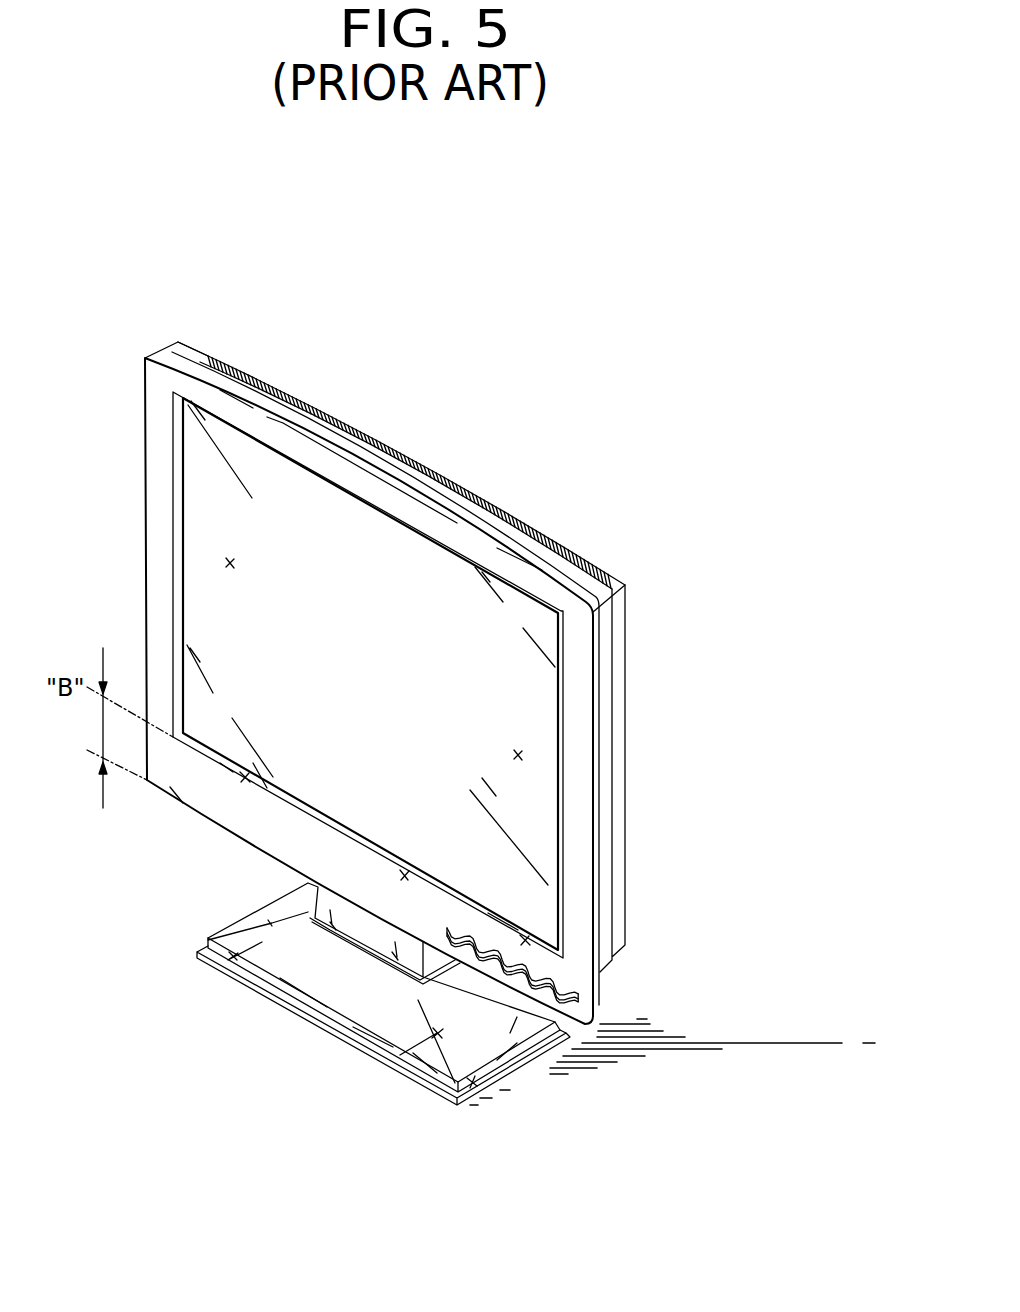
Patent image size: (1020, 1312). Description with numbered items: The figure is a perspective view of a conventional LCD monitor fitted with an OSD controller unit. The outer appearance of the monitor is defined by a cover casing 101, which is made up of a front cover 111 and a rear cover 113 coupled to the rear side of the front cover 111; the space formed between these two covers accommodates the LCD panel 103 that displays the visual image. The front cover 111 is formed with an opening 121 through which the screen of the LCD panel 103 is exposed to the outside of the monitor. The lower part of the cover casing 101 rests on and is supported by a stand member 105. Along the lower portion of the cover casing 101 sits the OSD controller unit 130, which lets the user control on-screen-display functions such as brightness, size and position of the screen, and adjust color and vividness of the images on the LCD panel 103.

The cover casing 101 is at (342, 611).
The front cover 111 is at (147, 357).
The rear cover 113 is at (185, 352).
The opening 121 is at (183, 565).
The LCD panel 103 is at (396, 662).
The stand member 105 is at (376, 999).
The OSD controller unit 130 is at (537, 966).